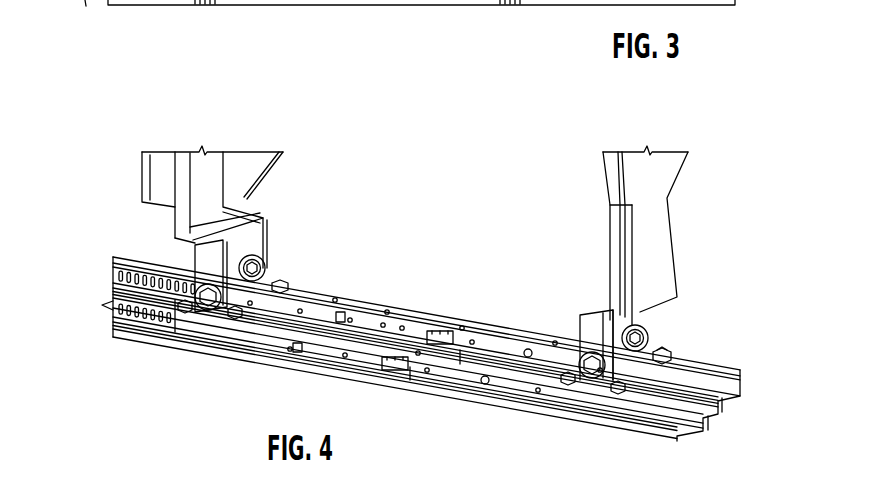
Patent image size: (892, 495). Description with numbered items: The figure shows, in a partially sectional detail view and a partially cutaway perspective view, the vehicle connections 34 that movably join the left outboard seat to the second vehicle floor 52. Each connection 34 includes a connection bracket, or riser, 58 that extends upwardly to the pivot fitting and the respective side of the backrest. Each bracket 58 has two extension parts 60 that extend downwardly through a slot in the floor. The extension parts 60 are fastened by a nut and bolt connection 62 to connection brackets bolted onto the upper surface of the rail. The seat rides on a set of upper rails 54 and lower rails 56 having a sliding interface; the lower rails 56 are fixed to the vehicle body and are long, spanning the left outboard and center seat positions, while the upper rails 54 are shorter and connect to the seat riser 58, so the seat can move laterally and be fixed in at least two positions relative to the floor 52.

In FIG. 4, the vehicle connections 34 is at (282, 266).
In FIG. 3, the second vehicle floor 52 is at (388, 5).
In FIG. 3, the upper rails 54 is at (82, 19).
In FIG. 4, the upper rails 54 is at (138, 320).
In FIG. 4, the lower rails 56 is at (420, 322).
In FIG. 4, the connection bracket (riser) 58 is at (230, 193).
In FIG. 4, the extension parts 60 is at (582, 325).
In FIG. 4, the nut and bolt connection 62 is at (664, 348).